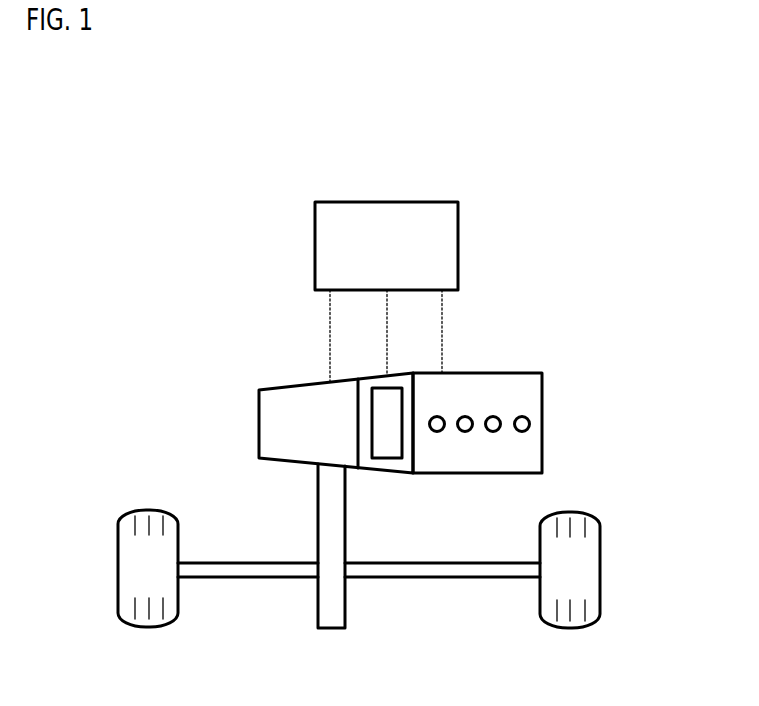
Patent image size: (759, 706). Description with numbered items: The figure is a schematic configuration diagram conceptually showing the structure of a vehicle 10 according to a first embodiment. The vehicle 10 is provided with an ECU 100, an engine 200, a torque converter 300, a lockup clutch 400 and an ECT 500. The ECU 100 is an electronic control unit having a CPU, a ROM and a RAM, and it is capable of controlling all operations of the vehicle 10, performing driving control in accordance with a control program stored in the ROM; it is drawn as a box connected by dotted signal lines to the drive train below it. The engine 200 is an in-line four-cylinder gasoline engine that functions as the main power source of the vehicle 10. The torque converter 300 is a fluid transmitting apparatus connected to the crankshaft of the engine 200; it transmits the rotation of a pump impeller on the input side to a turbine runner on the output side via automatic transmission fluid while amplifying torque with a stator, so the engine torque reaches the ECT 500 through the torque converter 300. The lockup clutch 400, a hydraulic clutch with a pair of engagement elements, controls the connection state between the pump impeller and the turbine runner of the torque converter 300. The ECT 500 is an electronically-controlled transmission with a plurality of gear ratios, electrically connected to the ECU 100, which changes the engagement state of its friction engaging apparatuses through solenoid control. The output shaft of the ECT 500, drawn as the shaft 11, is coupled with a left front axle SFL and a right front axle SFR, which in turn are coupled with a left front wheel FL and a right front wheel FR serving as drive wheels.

The vehicle 10 is at (631, 128).
The ECU 100 is at (458, 202).
The engine 200 is at (542, 373).
The torque converter 300 is at (403, 473).
The lockup clutch 400 is at (387, 458).
The ECT 500 is at (259, 390).
The drive shaft 11 is at (345, 628).
The left front wheel FL is at (118, 560).
The right front wheel FR is at (600, 567).
The left front axle SFL is at (257, 577).
The right front axle SFR is at (430, 577).